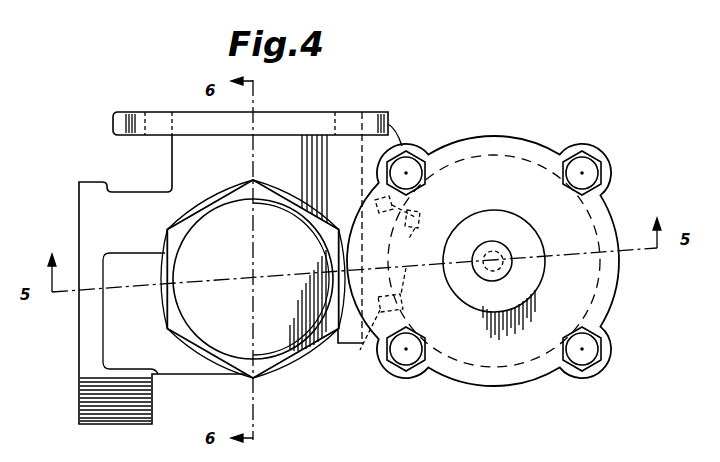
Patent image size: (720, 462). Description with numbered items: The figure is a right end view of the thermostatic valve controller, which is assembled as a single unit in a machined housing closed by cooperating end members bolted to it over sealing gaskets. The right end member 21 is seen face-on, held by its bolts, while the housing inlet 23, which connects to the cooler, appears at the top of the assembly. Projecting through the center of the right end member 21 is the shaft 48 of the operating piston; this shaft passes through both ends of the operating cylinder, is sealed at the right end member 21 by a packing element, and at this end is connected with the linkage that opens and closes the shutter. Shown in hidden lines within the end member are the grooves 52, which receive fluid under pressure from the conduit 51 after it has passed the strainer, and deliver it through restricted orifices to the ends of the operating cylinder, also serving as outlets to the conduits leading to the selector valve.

The right end member 21 is at (523, 141).
The inlet 23 is at (275, 114).
The shaft 48 is at (510, 250).
The conduit 51 is at (378, 205).
The grooves 52 is at (409, 252).